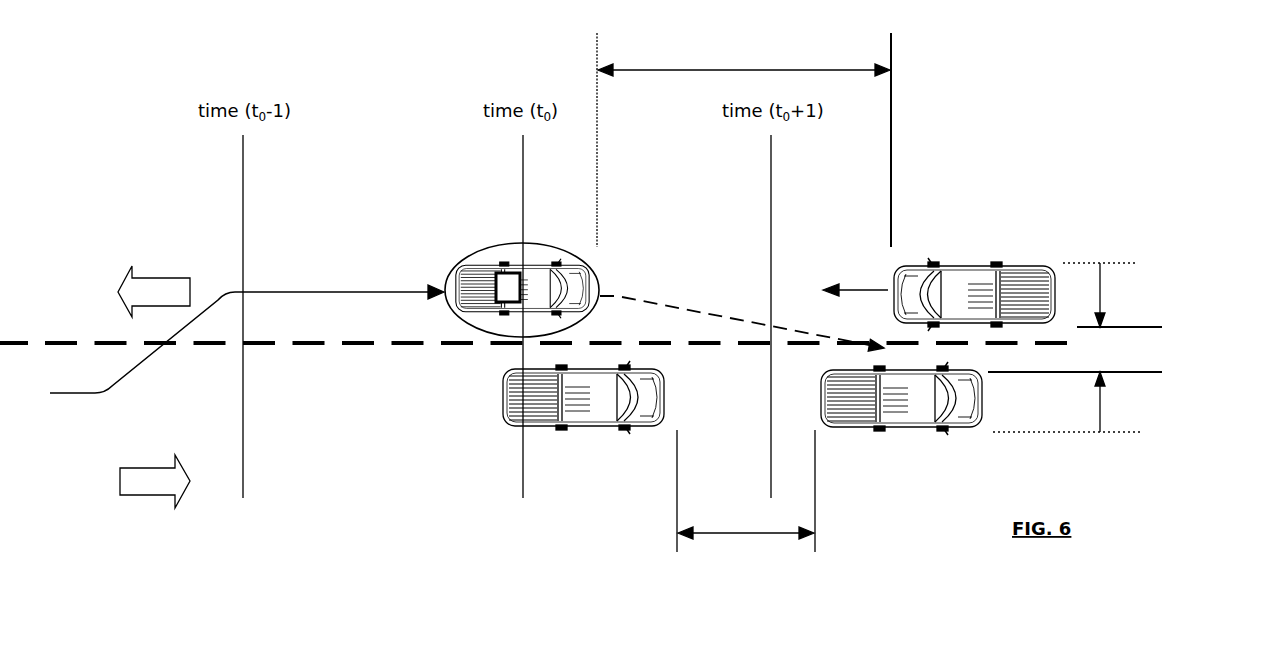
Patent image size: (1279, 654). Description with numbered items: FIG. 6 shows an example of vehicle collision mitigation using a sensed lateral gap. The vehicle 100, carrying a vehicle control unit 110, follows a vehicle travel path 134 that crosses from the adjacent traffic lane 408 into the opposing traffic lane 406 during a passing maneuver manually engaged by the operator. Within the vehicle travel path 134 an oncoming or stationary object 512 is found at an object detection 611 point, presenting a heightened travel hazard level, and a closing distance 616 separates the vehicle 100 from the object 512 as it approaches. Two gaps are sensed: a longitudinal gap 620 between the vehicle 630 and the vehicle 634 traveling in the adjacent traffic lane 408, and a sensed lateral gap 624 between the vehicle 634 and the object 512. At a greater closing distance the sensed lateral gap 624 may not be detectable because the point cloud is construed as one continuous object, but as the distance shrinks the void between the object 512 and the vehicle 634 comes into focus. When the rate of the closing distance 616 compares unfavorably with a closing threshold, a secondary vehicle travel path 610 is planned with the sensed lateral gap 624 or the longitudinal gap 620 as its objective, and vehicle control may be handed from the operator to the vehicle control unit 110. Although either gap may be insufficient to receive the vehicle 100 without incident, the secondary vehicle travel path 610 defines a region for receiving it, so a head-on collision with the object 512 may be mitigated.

The vehicle 100 is at (494, 276).
The vehicle control unit 110 is at (500, 258).
The vehicle travel path 134 is at (152, 362).
The opposing traffic lane 406 is at (136, 256).
The adjacent traffic lane 408 is at (149, 525).
The object 512 is at (925, 245).
The secondary vehicle travel path 610 is at (648, 290).
The object detection 611 is at (902, 145).
The closing distance 616 is at (743, 128).
The longitudinal gap 620 is at (730, 545).
The sensed lateral gap 624 is at (1165, 396).
The vehicle 630 is at (563, 442).
The vehicle 634 is at (883, 442).